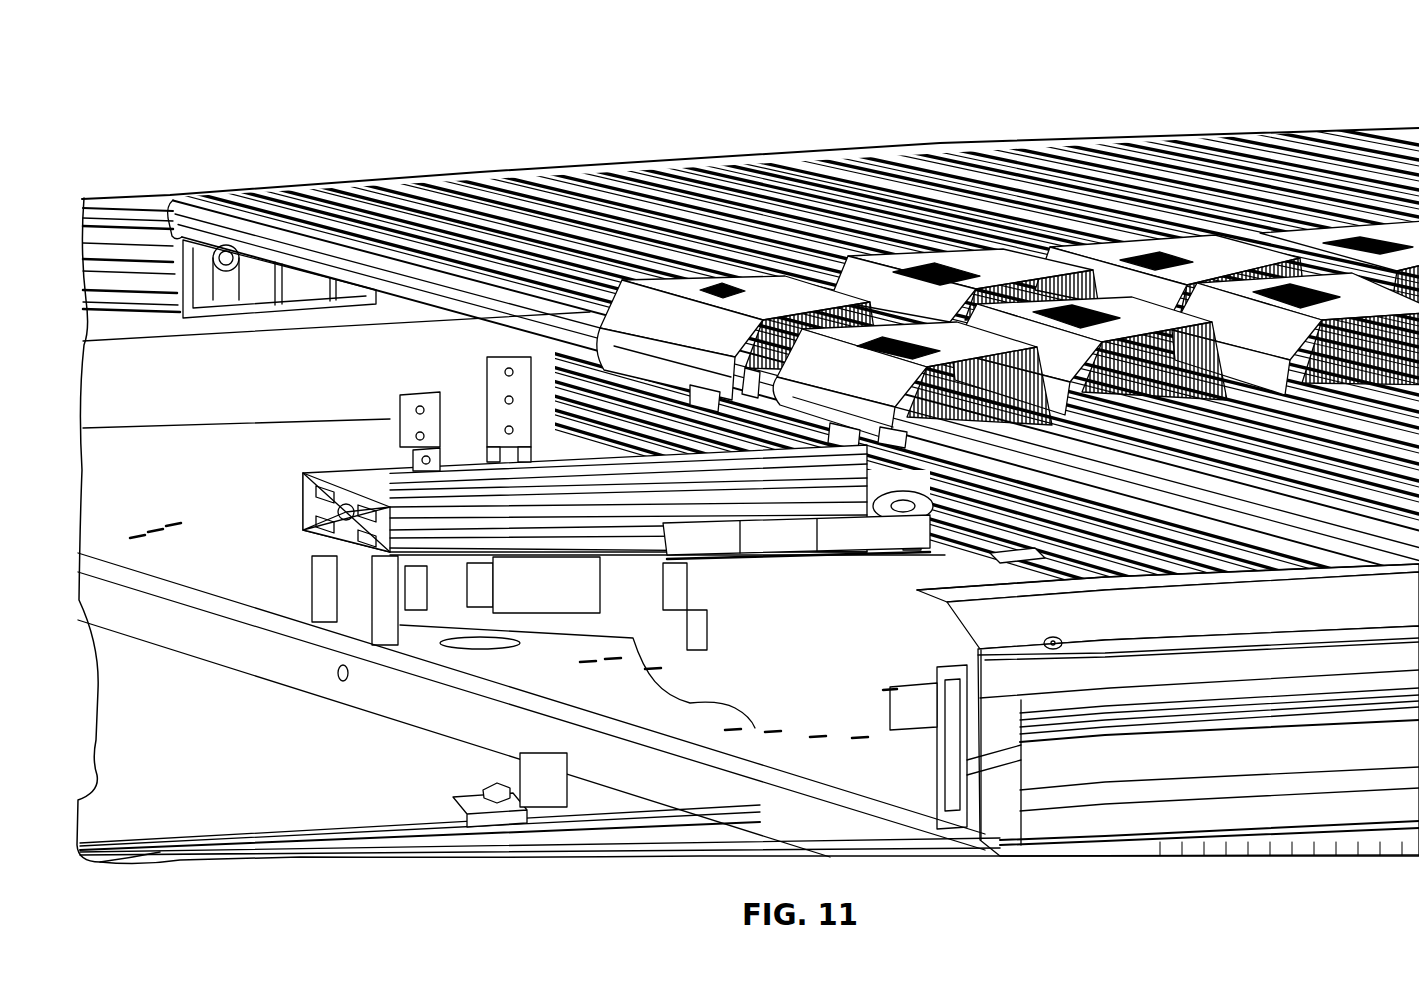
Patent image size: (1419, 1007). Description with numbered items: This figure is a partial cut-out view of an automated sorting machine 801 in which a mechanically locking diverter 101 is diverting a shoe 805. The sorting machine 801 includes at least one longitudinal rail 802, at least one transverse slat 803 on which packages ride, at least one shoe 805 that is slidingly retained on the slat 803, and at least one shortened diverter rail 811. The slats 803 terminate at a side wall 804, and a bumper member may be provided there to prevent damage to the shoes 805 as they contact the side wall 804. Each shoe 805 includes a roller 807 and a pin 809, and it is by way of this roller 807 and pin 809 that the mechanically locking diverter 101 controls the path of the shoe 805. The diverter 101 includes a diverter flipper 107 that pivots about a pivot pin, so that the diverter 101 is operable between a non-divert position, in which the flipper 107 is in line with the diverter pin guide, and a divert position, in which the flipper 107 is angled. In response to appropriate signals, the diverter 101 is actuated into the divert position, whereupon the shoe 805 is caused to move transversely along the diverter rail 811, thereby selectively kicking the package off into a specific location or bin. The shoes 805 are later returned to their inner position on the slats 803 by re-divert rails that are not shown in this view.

The mechanically locking diverter 101 is at (790, 712).
The diverter flipper 107 is at (775, 540).
The automated sorting machine 801 is at (1128, 110).
The longitudinal rail 802 is at (337, 471).
The transverse slat 803 is at (370, 200).
The side wall 804 is at (248, 307).
The shoe 805 is at (662, 298).
The roller 807 is at (890, 526).
The pin 809 is at (1023, 557).
The shortened diverter rail 811 is at (1155, 540).